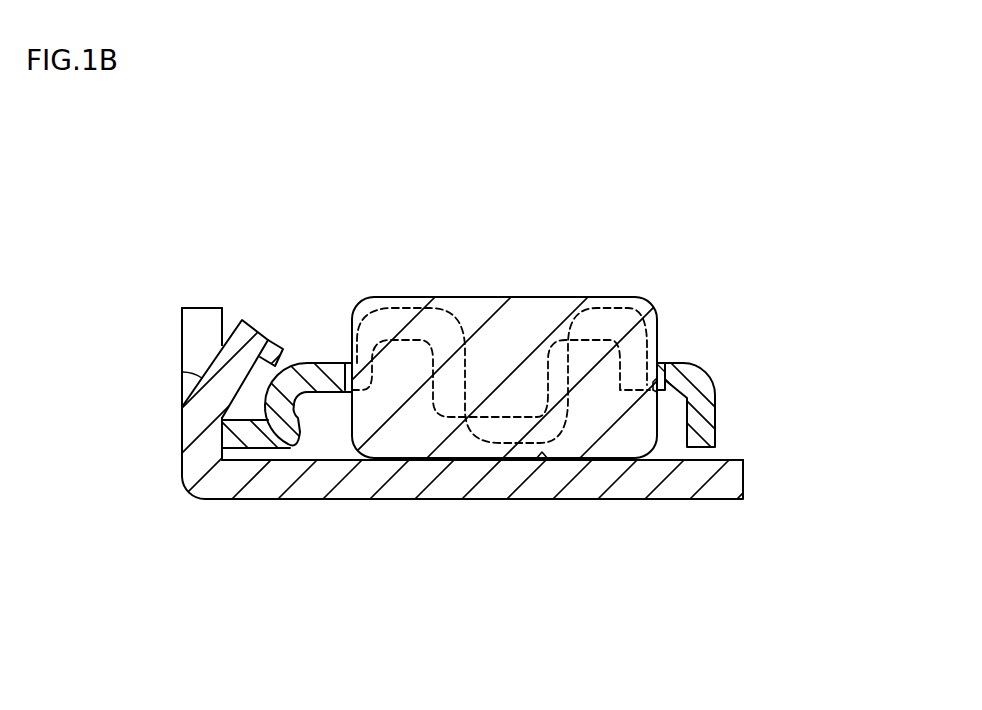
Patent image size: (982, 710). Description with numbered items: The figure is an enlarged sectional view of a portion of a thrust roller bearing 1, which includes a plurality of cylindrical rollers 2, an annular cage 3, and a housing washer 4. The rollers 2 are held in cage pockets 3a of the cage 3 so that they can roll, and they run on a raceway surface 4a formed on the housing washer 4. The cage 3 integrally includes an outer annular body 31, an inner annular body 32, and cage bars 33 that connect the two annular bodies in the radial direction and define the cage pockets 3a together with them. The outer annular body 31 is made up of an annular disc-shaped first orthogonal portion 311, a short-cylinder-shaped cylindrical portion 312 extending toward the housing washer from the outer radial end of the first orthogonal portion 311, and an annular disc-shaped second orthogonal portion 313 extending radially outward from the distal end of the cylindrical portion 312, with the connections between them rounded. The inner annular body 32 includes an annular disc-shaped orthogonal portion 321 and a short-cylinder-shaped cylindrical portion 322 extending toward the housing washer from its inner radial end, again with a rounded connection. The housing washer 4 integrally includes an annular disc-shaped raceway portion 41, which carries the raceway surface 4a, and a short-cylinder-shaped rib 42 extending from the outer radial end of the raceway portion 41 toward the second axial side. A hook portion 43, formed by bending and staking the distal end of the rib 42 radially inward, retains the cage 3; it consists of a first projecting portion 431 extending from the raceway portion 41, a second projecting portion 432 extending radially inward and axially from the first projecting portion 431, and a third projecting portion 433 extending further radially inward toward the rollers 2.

The thrust roller bearing 1 is at (574, 201).
The cylindrical roller 2 is at (535, 305).
The cage 3 is at (733, 405).
The cage pocket 3a is at (657, 390).
The housing washer 4 is at (184, 498).
The raceway surface 4a is at (541, 457).
The outer annular body 31 is at (352, 560).
The first orthogonal portion 311 is at (322, 383).
The cylindrical portion 312 is at (282, 412).
The second orthogonal portion 313 is at (240, 443).
The inner annular body 32 is at (760, 290).
The orthogonal portion 321 is at (668, 368).
The cylindrical portion 322 is at (705, 405).
The cage bar 33 is at (602, 318).
The raceway portion 41 is at (497, 490).
The rib 42 is at (181, 308).
The hook portion 43 is at (240, 318).
The first projecting portion 431 is at (192, 432).
The second projecting portion 432 is at (258, 332).
The third projecting portion 433 is at (276, 345).